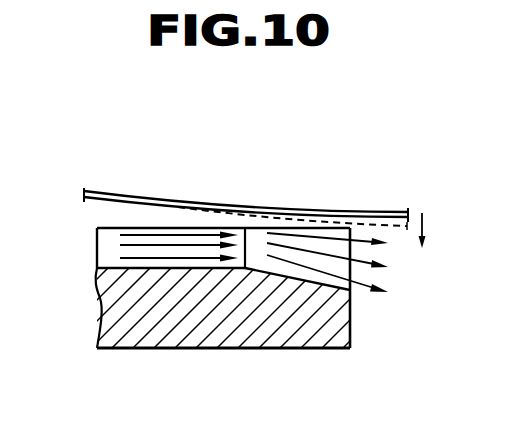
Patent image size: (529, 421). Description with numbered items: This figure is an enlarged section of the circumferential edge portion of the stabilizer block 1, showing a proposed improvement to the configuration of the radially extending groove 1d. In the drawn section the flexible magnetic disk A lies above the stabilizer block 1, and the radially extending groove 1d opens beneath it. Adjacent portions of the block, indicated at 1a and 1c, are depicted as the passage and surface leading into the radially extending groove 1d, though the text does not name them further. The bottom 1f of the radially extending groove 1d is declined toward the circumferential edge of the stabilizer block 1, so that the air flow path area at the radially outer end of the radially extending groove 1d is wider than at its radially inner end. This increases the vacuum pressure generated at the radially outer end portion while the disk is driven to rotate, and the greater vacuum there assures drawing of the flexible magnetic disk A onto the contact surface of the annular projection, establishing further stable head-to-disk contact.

The stabilizer block 1 is at (212, 323).
The fluid passage 1a is at (117, 228).
The passage bottom surface 1c is at (97, 268).
The radially extending groove 1d is at (255, 243).
The bottom of the radially extending groove 1f is at (336, 285).
The flexible magnetic disk A is at (121, 191).